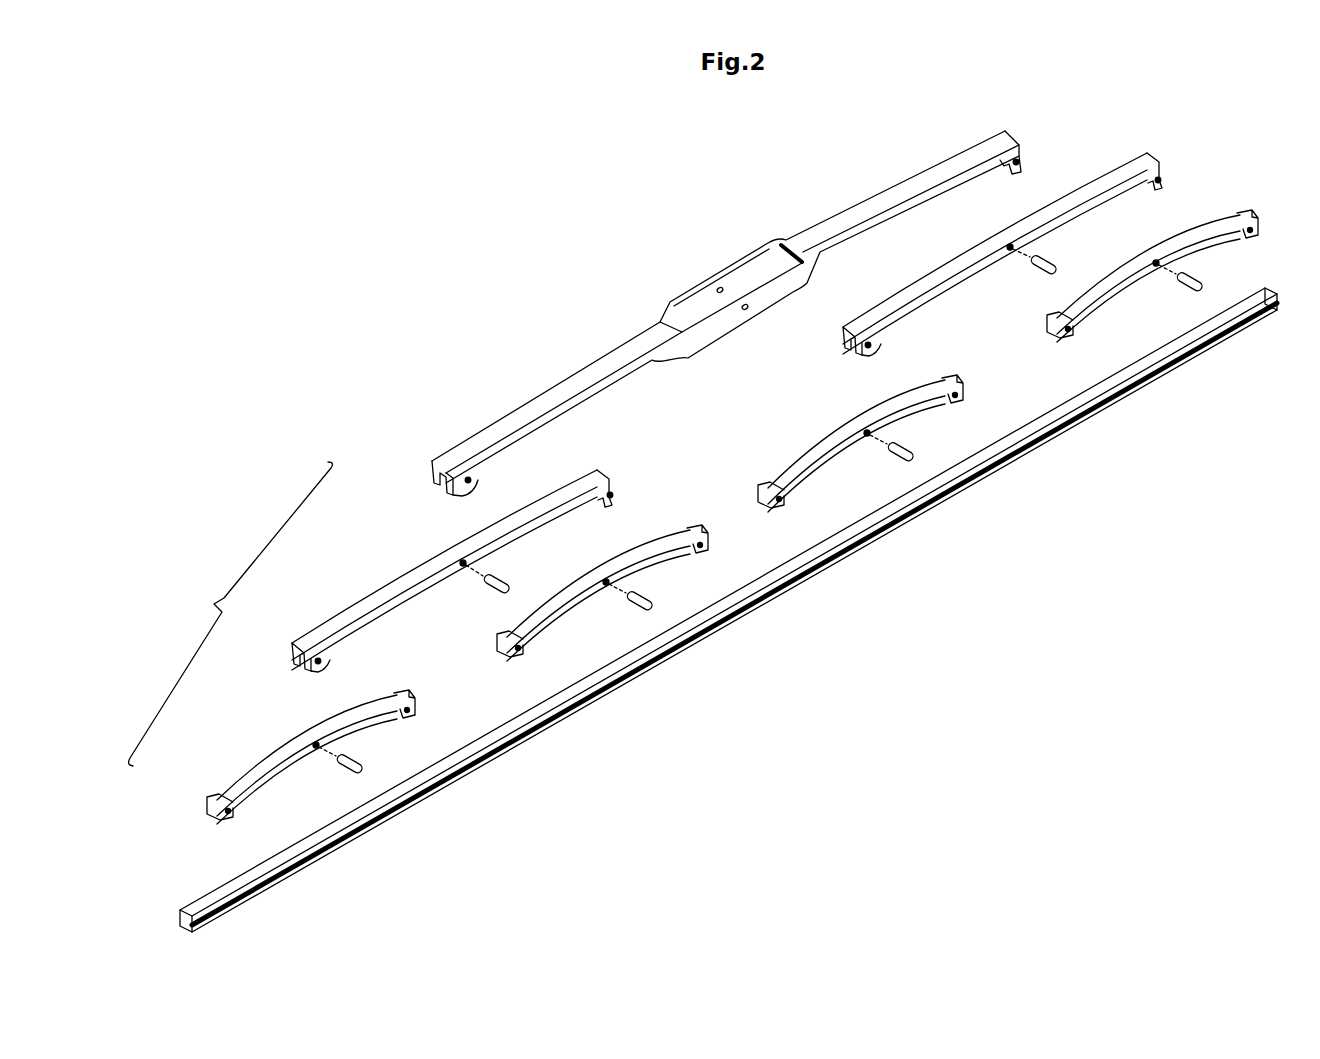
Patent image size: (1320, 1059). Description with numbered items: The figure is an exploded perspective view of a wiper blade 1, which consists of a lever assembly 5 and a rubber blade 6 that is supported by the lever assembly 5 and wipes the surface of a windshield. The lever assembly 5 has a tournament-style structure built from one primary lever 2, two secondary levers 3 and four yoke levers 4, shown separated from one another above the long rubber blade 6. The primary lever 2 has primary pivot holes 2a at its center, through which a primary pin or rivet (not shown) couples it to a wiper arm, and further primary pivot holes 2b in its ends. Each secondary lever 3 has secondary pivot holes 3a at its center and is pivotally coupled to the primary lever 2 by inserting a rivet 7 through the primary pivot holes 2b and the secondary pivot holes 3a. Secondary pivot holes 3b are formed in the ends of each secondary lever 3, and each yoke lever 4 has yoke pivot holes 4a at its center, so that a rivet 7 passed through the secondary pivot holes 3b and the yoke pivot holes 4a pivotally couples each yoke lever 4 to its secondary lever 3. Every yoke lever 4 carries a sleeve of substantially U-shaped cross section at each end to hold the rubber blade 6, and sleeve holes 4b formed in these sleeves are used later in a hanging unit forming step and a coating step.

The wiper blade 1 is at (386, 306).
The primary lever 2 is at (573, 377).
The primary pivot holes 2a is at (747, 311).
The primary pivot holes 2b is at (470, 482).
The secondary lever 3 is at (367, 603).
The secondary pivot holes 3a is at (462, 567).
The secondary pivot holes 3b is at (320, 664).
The yoke lever 4 is at (256, 768).
The yoke pivot holes 4a is at (315, 749).
The sleeve holes 4b is at (230, 814).
The lever assembly 5 is at (231, 614).
The rubber blade 6 is at (178, 928).
The rivet 7 is at (364, 769).